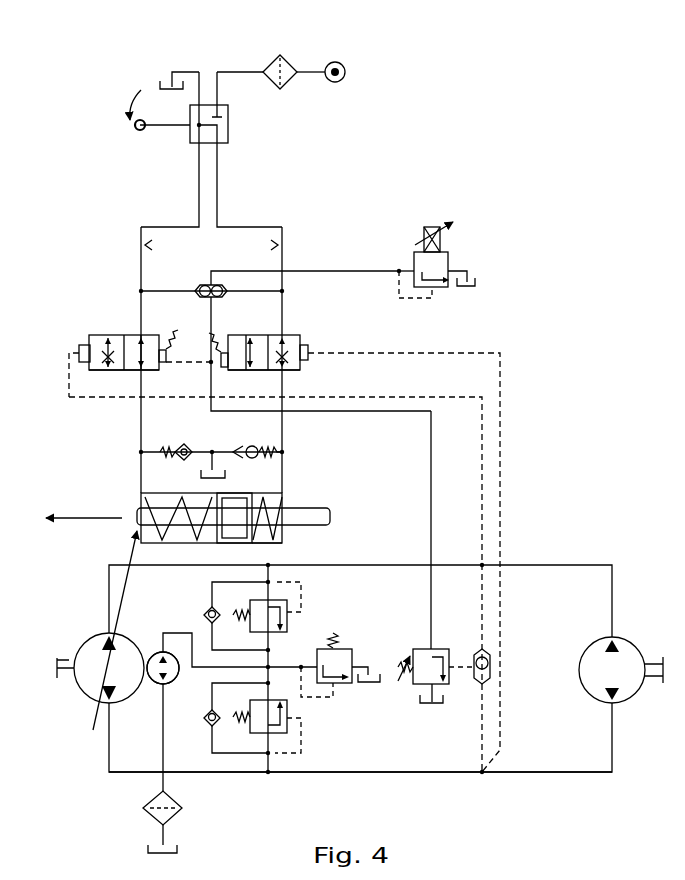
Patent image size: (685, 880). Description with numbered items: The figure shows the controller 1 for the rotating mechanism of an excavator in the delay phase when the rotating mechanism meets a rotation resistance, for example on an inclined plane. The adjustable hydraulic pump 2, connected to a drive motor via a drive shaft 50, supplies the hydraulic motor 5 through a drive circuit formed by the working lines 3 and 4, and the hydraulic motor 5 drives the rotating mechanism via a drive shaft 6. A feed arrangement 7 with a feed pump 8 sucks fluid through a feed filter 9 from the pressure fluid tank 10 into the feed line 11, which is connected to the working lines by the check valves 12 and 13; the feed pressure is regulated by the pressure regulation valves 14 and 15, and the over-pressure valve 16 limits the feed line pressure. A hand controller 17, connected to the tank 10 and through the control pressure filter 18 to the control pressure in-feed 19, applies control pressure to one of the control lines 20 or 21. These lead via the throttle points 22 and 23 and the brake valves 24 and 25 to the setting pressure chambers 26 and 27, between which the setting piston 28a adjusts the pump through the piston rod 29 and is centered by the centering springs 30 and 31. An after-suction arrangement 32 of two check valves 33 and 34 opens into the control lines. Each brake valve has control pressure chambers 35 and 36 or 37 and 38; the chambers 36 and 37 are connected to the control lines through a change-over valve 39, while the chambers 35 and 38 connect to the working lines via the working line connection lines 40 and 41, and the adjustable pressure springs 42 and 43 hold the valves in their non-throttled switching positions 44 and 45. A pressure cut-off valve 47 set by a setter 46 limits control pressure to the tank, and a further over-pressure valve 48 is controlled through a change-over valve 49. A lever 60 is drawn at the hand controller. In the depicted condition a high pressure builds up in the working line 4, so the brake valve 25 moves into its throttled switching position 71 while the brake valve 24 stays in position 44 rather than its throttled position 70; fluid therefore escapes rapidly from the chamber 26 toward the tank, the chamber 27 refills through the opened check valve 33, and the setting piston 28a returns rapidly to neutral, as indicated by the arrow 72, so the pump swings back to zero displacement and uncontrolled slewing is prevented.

The controller 1 is at (540, 246).
The adjustable hydraulic pump 2 is at (96, 640).
The working line 3 is at (366, 566).
The working line 4 is at (420, 773).
The hydraulic motor 5 is at (640, 696).
The drive shaft 6 is at (653, 660).
The feed arrangement 7 is at (147, 623).
The feed pump 8 is at (176, 676).
The feed filter 9 is at (143, 811).
The pressure fluid tank 10 is at (170, 80).
The feed line 11 is at (301, 666).
The check valve 12 is at (207, 726).
The check valve 13 is at (207, 608).
The pressure regulation valve 14 is at (302, 602).
The pressure regulation valve 15 is at (302, 728).
The over-pressure valve 16 is at (346, 651).
The hand controller 17 is at (228, 134).
The control pressure filter 18 is at (284, 85).
The control pressure in-feed 19 is at (340, 82).
The control line 20 is at (199, 203).
The control line 21 is at (217, 190).
The throttle point 22 is at (137, 246).
The throttle point 23 is at (289, 246).
The brake valve 24 is at (95, 327).
The brake valve 25 is at (316, 329).
The setting pressure chamber 26 is at (145, 500).
The setting pressure chamber 27 is at (282, 536).
The setting piston 28a is at (225, 528).
The piston rod 29 is at (137, 519).
The centering spring 30 is at (281, 511).
The centering spring 31 is at (180, 497).
The after-suction arrangement 32 is at (202, 443).
The check valve 33 is at (252, 446).
The check valve 34 is at (181, 445).
The control pressure chamber 35 is at (79, 349).
The control pressure chamber 36 is at (166, 361).
The control pressure chamber 37 is at (223, 368).
The control pressure chamber 38 is at (309, 353).
The change-over valve 39 is at (205, 284).
The working line connection line 40 is at (484, 470).
The working line connection line 41 is at (501, 415).
The adjustable pressure spring 42 is at (170, 333).
The adjustable pressure spring 43 is at (226, 334).
The non-throttled switching position 44 is at (129, 335).
The non-throttled switching position 45 is at (258, 335).
The setter 46 is at (424, 236).
The pressure cut-off valve 47 is at (448, 260).
The over-pressure valve 48 is at (441, 650).
The change-over valve 49 is at (491, 667).
The drive shaft 50 is at (63, 676).
The operating lever 60 is at (160, 130).
The throttled switching position 70 is at (92, 371).
The throttled switching position 71 is at (295, 370).
The arrow 72 is at (50, 515).